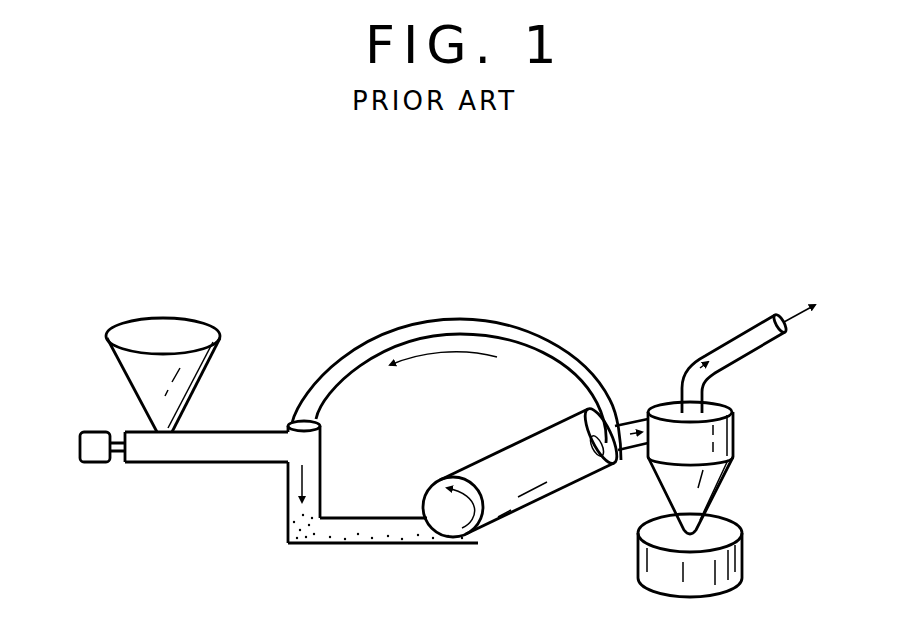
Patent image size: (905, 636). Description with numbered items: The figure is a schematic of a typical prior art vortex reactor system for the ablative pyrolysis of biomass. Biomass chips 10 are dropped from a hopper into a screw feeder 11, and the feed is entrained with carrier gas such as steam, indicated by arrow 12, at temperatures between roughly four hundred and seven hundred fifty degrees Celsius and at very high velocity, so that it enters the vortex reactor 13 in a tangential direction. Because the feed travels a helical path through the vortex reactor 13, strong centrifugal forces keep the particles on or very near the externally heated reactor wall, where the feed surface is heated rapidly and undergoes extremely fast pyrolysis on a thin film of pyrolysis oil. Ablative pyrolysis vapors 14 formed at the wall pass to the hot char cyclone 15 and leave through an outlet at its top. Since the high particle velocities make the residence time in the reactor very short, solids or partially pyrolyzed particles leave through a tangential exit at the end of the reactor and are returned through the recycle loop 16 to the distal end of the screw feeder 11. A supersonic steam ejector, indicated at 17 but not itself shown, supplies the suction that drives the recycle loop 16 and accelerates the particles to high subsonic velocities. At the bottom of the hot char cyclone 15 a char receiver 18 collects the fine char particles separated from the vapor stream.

The biomass chips 10 is at (182, 328).
The screw feeder 11 is at (177, 464).
The carrier gas (steam) arrow 12 is at (280, 529).
The vortex reactor 13 is at (528, 510).
The ablative pyrolysis vapors 14 is at (725, 340).
The hot char cyclone 15 is at (735, 452).
The recycle loop 16 is at (460, 319).
The supersonic steam ejector 17 is at (380, 546).
The char receiver 18 is at (742, 562).